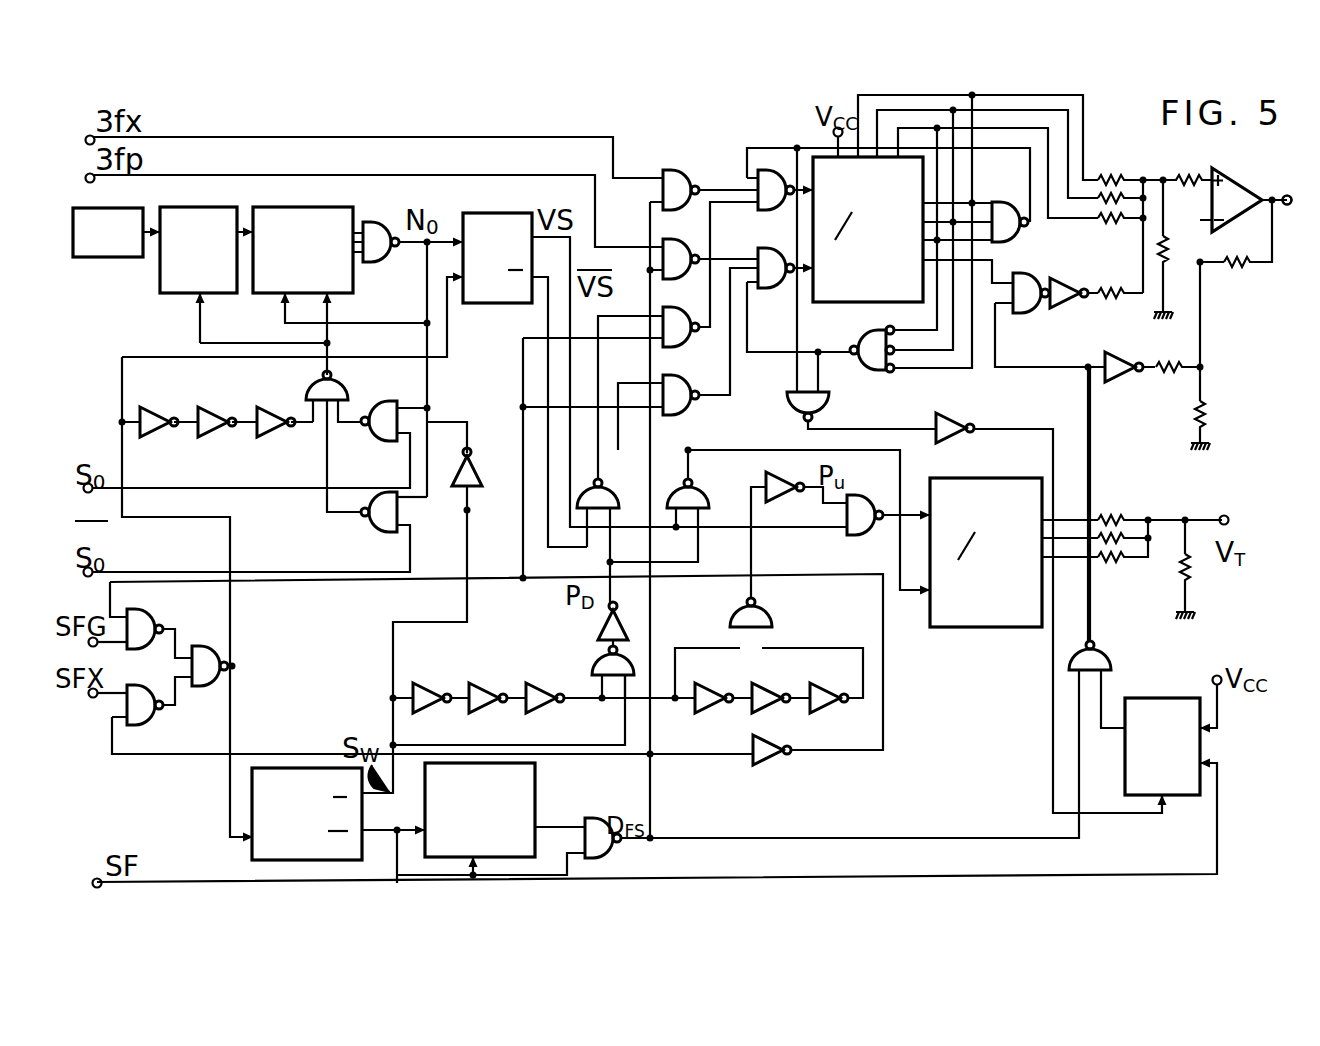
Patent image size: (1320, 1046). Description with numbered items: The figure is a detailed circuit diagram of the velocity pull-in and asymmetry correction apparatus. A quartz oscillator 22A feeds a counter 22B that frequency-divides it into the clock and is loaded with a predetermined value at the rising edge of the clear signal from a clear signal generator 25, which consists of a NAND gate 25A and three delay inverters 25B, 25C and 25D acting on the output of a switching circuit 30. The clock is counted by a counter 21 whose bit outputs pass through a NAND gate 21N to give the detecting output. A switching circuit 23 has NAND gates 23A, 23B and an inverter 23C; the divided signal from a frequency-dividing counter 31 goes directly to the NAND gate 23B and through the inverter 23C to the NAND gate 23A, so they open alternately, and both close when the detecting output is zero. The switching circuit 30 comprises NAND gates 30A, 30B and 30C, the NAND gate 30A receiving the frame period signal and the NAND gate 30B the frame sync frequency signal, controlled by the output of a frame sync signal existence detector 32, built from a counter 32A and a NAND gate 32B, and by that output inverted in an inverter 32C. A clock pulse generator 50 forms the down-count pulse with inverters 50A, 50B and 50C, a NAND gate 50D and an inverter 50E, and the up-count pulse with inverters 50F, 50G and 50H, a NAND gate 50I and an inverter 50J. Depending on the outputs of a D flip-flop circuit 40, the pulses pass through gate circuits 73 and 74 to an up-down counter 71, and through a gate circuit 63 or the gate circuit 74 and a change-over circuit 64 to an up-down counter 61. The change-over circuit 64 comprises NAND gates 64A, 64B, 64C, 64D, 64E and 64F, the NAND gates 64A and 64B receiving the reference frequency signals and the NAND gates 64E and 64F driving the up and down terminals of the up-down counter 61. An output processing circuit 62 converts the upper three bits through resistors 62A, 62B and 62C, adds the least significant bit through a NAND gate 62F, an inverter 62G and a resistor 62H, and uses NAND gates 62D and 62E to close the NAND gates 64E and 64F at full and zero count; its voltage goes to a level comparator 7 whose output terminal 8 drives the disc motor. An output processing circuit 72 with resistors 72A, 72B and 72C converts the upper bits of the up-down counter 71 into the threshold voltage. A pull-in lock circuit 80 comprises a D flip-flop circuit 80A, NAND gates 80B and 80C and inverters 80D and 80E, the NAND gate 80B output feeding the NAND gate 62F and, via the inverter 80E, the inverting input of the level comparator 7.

The quartz oscillator 22A is at (136, 258).
The counter 22B is at (170, 296).
The counter 21 is at (266, 296).
The NAND gate 21N is at (390, 262).
The D flip-flop circuit 40 is at (490, 303).
The clear signal generator 25 is at (296, 394).
The NAND gate 25A is at (346, 386).
The inverter 25B is at (160, 432).
The inverter 25C is at (218, 432).
The inverter 25D is at (277, 432).
The switching circuit 23 is at (480, 404).
The NAND gate 23A is at (389, 434).
The NAND gate 23B is at (386, 532).
The inverter 23C is at (479, 486).
The switching circuit 30 is at (218, 624).
The NAND gate 30A is at (152, 718).
The NAND gate 30B is at (152, 642).
The NAND gate 30C is at (214, 682).
The counter 31 is at (252, 846).
The frame sync signal existence detector 32 is at (632, 794).
The counter 32A is at (542, 778).
The NAND gate 32B is at (614, 850).
The inverter 32C is at (770, 770).
The clock pulse generator 50 is at (500, 656).
The inverter 50A is at (420, 713).
The inverter 50B is at (475, 713).
The inverter 50C is at (535, 713).
The NAND gate 50D is at (604, 664).
The inverter 50E is at (598, 628).
The inverter 50F is at (713, 713).
The inverter 50G is at (755, 713).
The inverter 50H is at (820, 713).
The NAND gate 50I is at (773, 610).
The inverter 50J is at (772, 500).
The gate circuit 63 is at (618, 506).
The gate circuit 74 is at (703, 470).
The gate circuit 73 is at (870, 538).
The change-over circuit 64 is at (697, 157).
The NAND gate 64A is at (676, 210).
The NAND gate 64B is at (681, 278).
The NAND gate 64C is at (681, 346).
The NAND gate 64D is at (681, 414).
The NAND gate 64E is at (774, 211).
The NAND gate 64F is at (778, 290).
The up-down counter 61 is at (905, 300).
The output processing circuit 62 is at (1128, 133).
The resistor 62A is at (1116, 178).
The resistor 62B is at (1102, 205).
The resistor 62C is at (1112, 226).
The NAND gate 62D is at (1004, 204).
The NAND gate 62E is at (870, 372).
The NAND gate 62F is at (1032, 312).
The inverter 62G is at (1072, 310).
The resistor 62H is at (1106, 298).
The level comparator 7 is at (1238, 218).
The output terminal 8 is at (1280, 194).
The up-down counter 71 is at (1000, 630).
The output processing circuit 72 is at (1142, 474).
The resistor 72A is at (1130, 516).
The resistor 72B is at (1104, 534).
The resistor 72C is at (1108, 562).
The constant linear velocity pull-in lock circuit 80 is at (1170, 694).
The D flip-flop circuit 80A is at (1180, 800).
The NAND gate 80B is at (1110, 666).
The NAND gate 80C is at (800, 410).
The inverter 80D is at (968, 418).
The inverter 80E is at (1136, 380).